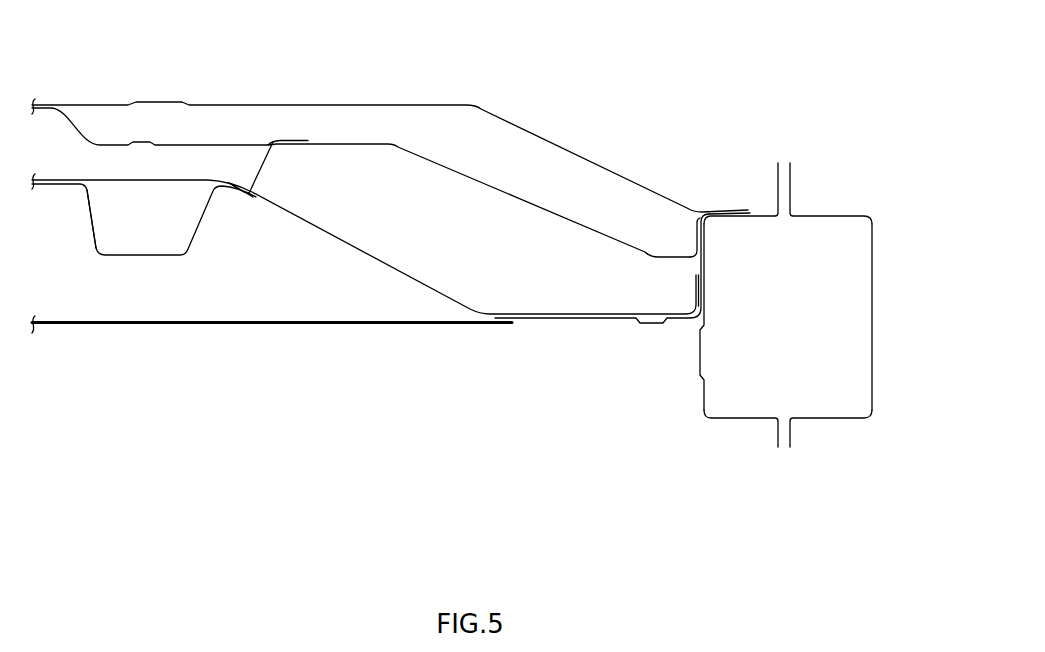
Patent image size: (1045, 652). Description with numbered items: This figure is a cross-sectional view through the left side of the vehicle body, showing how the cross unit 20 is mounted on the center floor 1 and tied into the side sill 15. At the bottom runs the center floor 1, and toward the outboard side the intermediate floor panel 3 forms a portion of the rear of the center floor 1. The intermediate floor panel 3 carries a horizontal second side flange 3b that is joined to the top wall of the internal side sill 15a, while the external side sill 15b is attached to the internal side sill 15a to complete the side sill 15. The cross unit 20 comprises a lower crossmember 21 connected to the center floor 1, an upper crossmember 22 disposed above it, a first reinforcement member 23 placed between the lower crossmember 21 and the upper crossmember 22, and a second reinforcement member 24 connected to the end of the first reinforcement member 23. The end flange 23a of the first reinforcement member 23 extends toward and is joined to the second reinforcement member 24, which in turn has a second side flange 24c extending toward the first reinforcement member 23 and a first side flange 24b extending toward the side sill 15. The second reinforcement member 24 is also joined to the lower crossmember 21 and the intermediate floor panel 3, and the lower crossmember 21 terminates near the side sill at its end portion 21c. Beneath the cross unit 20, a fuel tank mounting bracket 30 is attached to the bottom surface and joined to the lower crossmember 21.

The center floor 1 is at (318, 336).
The intermediate floor panel 3 is at (622, 259).
The second side flange 3b is at (713, 212).
The side sill 15 is at (782, 326).
The internal side sill 15a is at (699, 397).
The external side sill 15b is at (872, 347).
The cross unit 20 is at (390, 141).
The lower crossmember 21 is at (365, 244).
The lower panel end flange 21c is at (695, 287).
The upper crossmember 22 is at (395, 105).
The first reinforcement member 23 is at (269, 128).
The end flange 23a is at (290, 140).
The second reinforcement member 24 is at (366, 168).
The first side flange 24b is at (697, 243).
The second side flange 24c is at (244, 176).
The fuel tank mounting bracket 30 is at (90, 216).